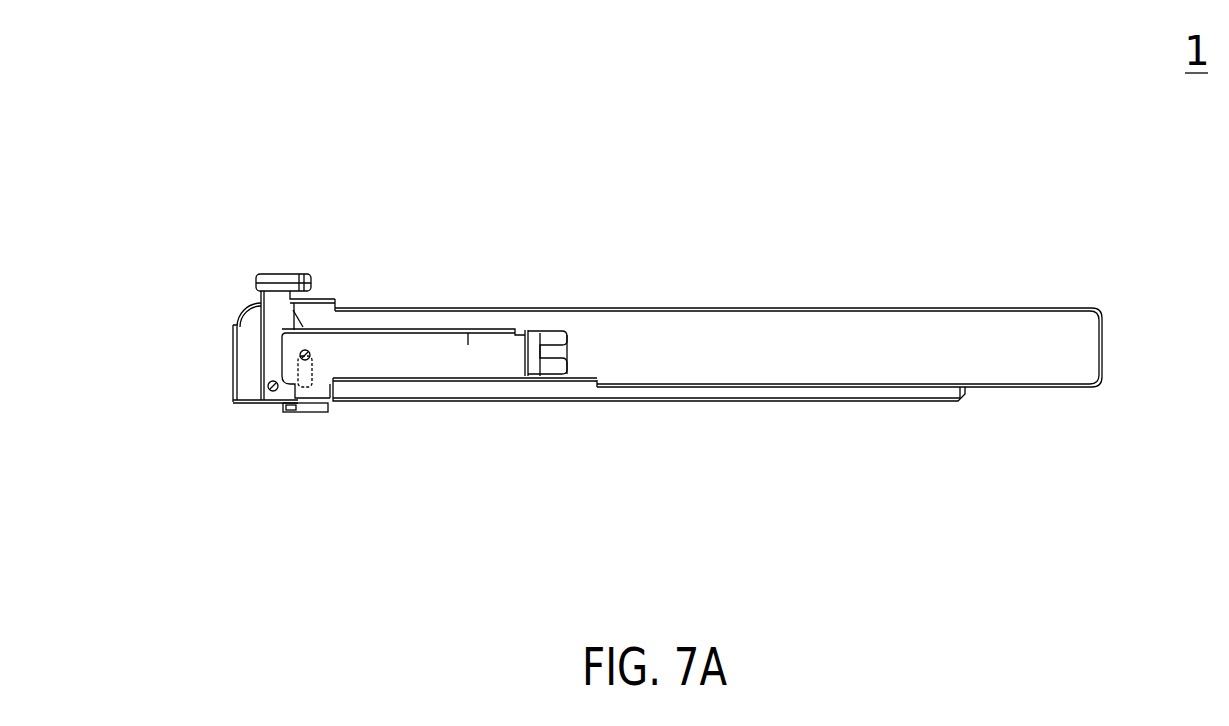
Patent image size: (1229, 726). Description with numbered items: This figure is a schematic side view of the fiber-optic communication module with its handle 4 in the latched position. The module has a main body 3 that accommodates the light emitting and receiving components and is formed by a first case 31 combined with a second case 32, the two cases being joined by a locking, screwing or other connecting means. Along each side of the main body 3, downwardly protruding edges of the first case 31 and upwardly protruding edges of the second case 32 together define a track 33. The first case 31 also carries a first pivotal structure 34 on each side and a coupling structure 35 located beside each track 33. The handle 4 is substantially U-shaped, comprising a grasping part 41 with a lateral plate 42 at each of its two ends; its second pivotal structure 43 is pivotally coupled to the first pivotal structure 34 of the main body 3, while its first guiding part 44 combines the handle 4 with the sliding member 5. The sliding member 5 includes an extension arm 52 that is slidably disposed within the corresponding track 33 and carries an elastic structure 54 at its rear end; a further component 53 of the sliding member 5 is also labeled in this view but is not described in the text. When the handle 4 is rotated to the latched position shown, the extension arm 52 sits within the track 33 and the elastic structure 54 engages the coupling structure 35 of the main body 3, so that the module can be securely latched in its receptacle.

The main body 3 is at (423, 235).
The first case 31 is at (742, 345).
The second case 32 is at (825, 393).
The track 33 is at (492, 331).
The first pivotal structure 34 is at (290, 340).
The coupling structure 35 is at (572, 359).
The handle 4 is at (150, 277).
The grasping part 41 is at (266, 285).
The lateral plate 42 is at (268, 344).
The second pivotal structure 43 is at (268, 388).
The first guiding part 44 is at (290, 406).
The sliding member 5 is at (355, 487).
The extension arm 52 is at (410, 352).
The pin 53 is at (309, 358).
The elastic structure 54 is at (552, 340).